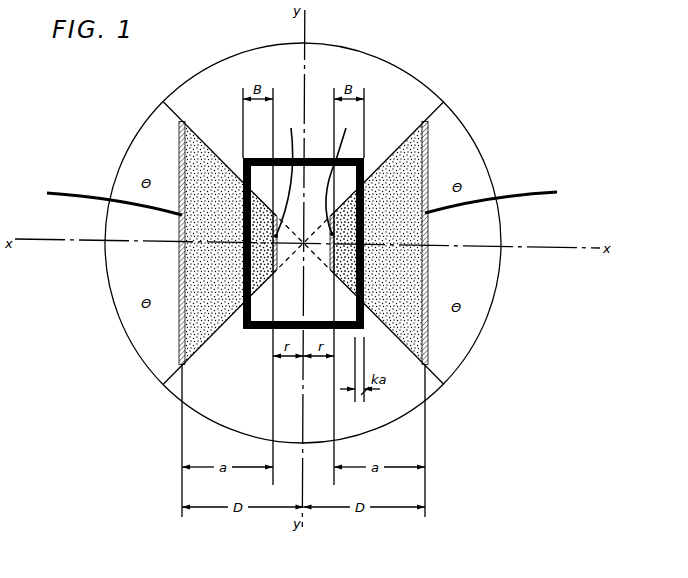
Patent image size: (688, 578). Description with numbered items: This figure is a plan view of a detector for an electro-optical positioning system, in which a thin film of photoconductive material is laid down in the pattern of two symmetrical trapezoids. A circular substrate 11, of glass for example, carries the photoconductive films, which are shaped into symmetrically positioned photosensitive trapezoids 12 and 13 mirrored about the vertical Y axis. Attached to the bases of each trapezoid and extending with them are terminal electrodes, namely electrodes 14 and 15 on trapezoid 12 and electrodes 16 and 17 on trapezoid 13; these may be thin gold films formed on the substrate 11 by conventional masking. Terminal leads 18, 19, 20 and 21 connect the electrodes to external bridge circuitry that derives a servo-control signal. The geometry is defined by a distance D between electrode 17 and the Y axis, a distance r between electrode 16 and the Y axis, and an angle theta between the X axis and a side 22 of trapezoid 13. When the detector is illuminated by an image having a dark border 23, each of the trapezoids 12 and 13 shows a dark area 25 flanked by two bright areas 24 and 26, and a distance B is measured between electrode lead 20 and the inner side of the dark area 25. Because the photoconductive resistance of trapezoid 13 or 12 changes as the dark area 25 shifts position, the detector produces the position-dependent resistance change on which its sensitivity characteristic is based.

The circular substrate 11 is at (130, 339).
The photosensitive trapezoid 12 is at (204, 334).
The photosensitive trapezoid 13 is at (417, 358).
The terminal electrode 14 is at (178, 305).
The terminal electrode 15 is at (278, 263).
The terminal electrode 16 is at (332, 259).
The terminal electrode 17 is at (427, 330).
The terminal lead 18 is at (63, 193).
The terminal lead 19 is at (284, 176).
The terminal lead 20 is at (342, 175).
The terminal lead 21 is at (530, 192).
The side of trapezoid 22 is at (412, 137).
The dark border 23 is at (258, 336).
The bright area 24 is at (345, 275).
The dark area 25 is at (243, 260).
The bright area 26 is at (193, 175).